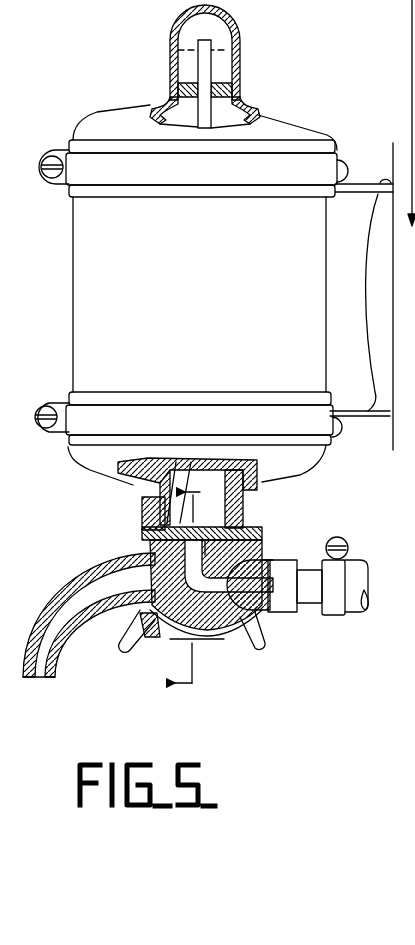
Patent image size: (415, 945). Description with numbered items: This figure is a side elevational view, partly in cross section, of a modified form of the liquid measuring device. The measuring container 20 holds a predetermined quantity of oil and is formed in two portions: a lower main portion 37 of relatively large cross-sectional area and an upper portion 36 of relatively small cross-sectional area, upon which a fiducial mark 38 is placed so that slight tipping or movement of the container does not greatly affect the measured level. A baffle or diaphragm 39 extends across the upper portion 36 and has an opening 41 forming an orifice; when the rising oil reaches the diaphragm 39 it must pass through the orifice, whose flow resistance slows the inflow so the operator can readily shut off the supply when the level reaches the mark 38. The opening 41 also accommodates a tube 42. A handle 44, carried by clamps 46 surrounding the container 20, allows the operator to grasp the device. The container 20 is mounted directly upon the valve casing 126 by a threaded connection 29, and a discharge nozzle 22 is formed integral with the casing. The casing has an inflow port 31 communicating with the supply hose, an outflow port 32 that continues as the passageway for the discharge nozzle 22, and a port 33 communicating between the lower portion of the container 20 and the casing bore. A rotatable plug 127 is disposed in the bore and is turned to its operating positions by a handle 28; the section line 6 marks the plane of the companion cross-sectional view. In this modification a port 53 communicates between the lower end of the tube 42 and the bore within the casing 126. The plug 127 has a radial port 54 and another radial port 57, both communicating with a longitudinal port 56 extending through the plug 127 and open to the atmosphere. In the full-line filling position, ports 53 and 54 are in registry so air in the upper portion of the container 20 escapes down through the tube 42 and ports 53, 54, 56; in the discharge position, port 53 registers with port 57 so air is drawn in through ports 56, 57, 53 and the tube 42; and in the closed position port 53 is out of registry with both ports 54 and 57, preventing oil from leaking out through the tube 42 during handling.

The section line 6- 6 is at (192, 588).
The measuring container 20 is at (289, 127).
The discharge nozzle 22 is at (72, 589).
The handle 28 is at (135, 632).
The threaded connection 29 is at (246, 500).
The inflow port 31 is at (318, 586).
The outflow port 32 is at (100, 597).
The port 33 is at (248, 526).
The upper container portion 36 is at (220, 62).
The lower main container portion 37 is at (310, 249).
The fiducial mark 38 is at (228, 50).
The baffle or diaphragm 39 is at (178, 90).
The opening 41 is at (232, 90).
The tube 42 is at (148, 480).
The handle 44 is at (371, 357).
The clamps 46 is at (58, 184).
The port 53 is at (152, 548).
The radial port 54 is at (172, 580).
The longitudinal port 56 is at (252, 618).
The radial port 57 is at (236, 561).
The valve casing 126 is at (240, 541).
The valve plug 127 is at (168, 626).